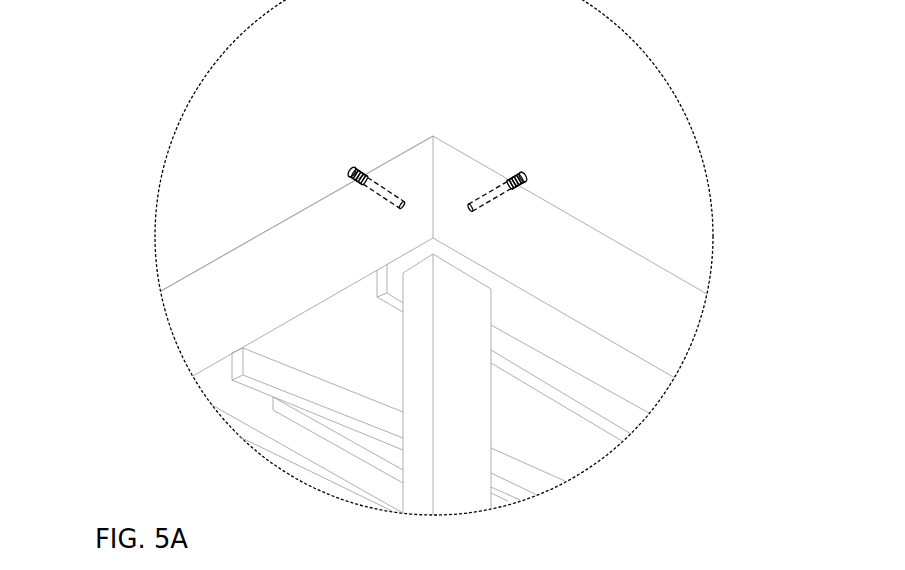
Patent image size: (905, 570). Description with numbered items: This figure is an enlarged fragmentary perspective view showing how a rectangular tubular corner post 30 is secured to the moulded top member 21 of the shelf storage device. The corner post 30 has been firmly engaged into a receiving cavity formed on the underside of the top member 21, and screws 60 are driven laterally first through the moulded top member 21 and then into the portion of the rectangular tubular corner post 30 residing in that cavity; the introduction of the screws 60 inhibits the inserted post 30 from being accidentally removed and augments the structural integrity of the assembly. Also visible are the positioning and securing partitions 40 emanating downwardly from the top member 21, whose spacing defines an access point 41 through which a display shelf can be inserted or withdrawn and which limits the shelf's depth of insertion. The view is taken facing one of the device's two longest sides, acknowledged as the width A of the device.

The width of the device A is at (239, 213).
The moulded top member 21 is at (263, 263).
The rectangular tubular corner post 30 is at (467, 442).
The positioning and securing partition 40 is at (236, 370).
The access point 41 is at (337, 318).
The screw 60 is at (413, 160).